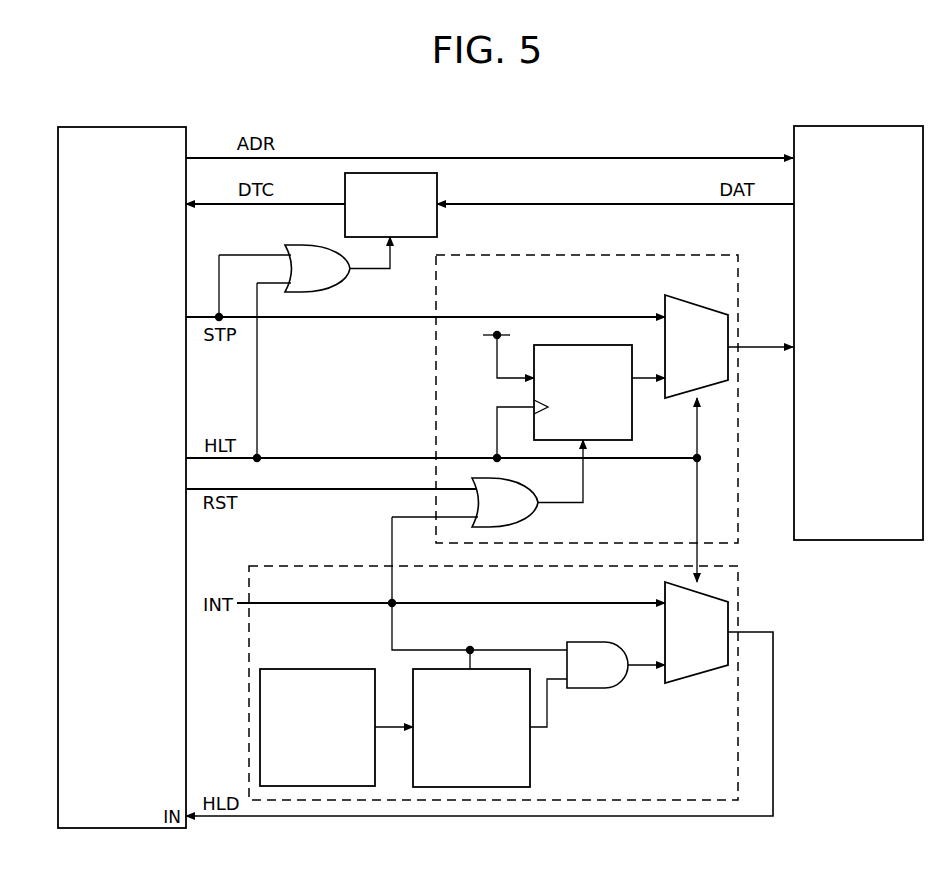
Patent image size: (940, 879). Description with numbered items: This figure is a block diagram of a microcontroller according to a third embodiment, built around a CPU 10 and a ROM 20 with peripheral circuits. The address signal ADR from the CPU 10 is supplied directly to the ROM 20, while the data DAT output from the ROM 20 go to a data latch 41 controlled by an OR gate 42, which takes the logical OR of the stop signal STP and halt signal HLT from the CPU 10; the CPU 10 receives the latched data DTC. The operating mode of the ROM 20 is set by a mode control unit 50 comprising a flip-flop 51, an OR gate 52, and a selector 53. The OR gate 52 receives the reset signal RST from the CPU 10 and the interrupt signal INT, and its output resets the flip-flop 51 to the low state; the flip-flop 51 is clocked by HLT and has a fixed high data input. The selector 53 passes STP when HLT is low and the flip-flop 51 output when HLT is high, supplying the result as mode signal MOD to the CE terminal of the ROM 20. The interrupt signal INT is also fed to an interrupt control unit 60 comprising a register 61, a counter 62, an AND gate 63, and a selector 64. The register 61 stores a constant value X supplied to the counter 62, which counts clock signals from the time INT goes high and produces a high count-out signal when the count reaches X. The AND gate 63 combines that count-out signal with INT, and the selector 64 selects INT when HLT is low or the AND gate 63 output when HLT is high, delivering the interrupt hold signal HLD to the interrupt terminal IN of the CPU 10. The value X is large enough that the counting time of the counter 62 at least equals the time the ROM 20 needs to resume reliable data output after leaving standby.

The CPU 10 is at (121, 127).
The ROM 20 is at (856, 126).
The data latch 41 is at (388, 173).
The OR gate 42 is at (298, 245).
The mode control unit 50 is at (598, 255).
The flip-flop 51 is at (534, 392).
The OR gate 52 is at (532, 517).
The selector 53 is at (694, 304).
The interrupt control unit 60 is at (740, 612).
The register 61 is at (317, 669).
The counter 62 is at (531, 757).
The AND gate 63 is at (595, 688).
The selector 64 is at (694, 675).